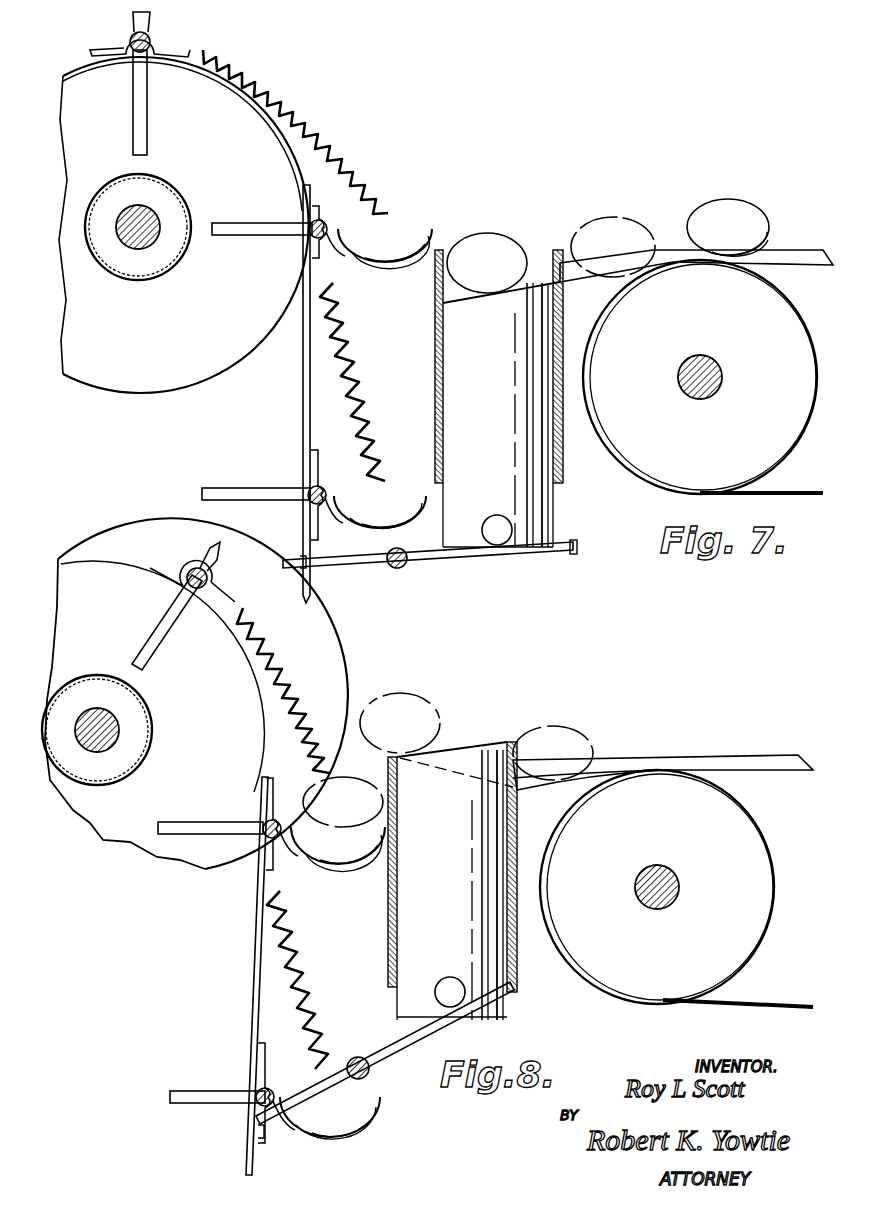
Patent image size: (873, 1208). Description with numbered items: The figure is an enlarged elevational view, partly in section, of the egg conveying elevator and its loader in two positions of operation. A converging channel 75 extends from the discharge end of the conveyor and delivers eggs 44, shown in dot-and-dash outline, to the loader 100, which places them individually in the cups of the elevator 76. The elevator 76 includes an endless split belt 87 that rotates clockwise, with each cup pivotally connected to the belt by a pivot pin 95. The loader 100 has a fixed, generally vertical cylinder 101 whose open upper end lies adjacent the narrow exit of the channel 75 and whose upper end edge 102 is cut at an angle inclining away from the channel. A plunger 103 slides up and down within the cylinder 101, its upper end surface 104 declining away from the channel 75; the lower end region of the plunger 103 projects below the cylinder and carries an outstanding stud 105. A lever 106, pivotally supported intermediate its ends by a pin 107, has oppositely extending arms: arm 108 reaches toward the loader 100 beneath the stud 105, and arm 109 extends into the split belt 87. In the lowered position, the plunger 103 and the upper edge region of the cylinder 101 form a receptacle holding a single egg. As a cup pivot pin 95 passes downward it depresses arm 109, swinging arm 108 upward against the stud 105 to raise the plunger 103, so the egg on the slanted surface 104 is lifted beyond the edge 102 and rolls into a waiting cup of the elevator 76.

In FIG. 7, the eggs 44 is at (478, 263).
In FIG. 8, the eggs 44 is at (320, 793).
In FIG. 7, the converging channel 75 is at (668, 257).
In FIG. 8, the converging channel 75 is at (648, 728).
In FIG. 7, the elevator 76 is at (290, 89).
In FIG. 8, the elevator 76 is at (298, 684).
In FIG. 7, the split belt 87 is at (303, 398).
In FIG. 8, the split belt 87 is at (258, 948).
In FIG. 7, the pivot pin 95 is at (310, 508).
In FIG. 8, the pivot pin 95 is at (257, 1093).
In FIG. 7, the elevator loader 100 is at (590, 505).
In FIG. 8, the elevator loader 100 is at (525, 1008).
In FIG. 7, the cylinder 101 is at (437, 348).
In FIG. 8, the cylinder 101 is at (390, 886).
In FIG. 7, the upper end edge 102 is at (536, 278).
In FIG. 7, the plunger 103 is at (458, 398).
In FIG. 8, the plunger 103 is at (417, 903).
In FIG. 7, the upper end surface 104 is at (460, 302).
In FIG. 8, the upper end surface 104 is at (486, 725).
In FIG. 7, the stud 105 is at (495, 545).
In FIG. 8, the stud 105 is at (447, 993).
In FIG. 7, the lever 106 is at (445, 562).
In FIG. 8, the lever 106 is at (380, 1055).
In FIG. 7, the pin 107 is at (393, 566).
In FIG. 8, the pin 107 is at (367, 1040).
In FIG. 7, the lever arm 108 is at (565, 556).
In FIG. 7, the lever arm 109 is at (291, 566).
In FIG. 8, the lever arm 109 is at (265, 1123).